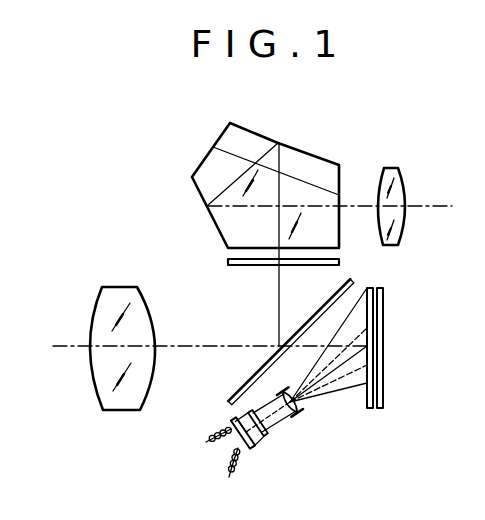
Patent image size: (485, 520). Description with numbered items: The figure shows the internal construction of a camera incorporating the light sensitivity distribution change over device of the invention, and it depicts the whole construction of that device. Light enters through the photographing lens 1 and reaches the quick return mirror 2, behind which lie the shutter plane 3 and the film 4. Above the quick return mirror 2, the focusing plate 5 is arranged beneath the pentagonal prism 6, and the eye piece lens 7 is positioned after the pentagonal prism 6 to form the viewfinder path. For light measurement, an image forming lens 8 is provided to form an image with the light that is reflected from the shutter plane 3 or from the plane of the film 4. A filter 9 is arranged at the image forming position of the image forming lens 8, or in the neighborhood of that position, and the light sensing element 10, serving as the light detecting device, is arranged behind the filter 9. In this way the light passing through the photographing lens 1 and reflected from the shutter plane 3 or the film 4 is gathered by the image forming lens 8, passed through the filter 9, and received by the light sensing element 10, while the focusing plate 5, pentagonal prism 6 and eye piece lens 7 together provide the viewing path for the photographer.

The photographing lens 1 is at (108, 413).
The quick return mirror 2 is at (229, 403).
The shutter plane 3 is at (370, 410).
The film 4 is at (380, 410).
The focusing plate 5 is at (227, 261).
The pentagonal prism 6 is at (200, 187).
The eye piece lens 7 is at (395, 172).
The image forming lens 8 is at (300, 412).
The filter 9 is at (268, 437).
The light sensing element 10 is at (252, 452).